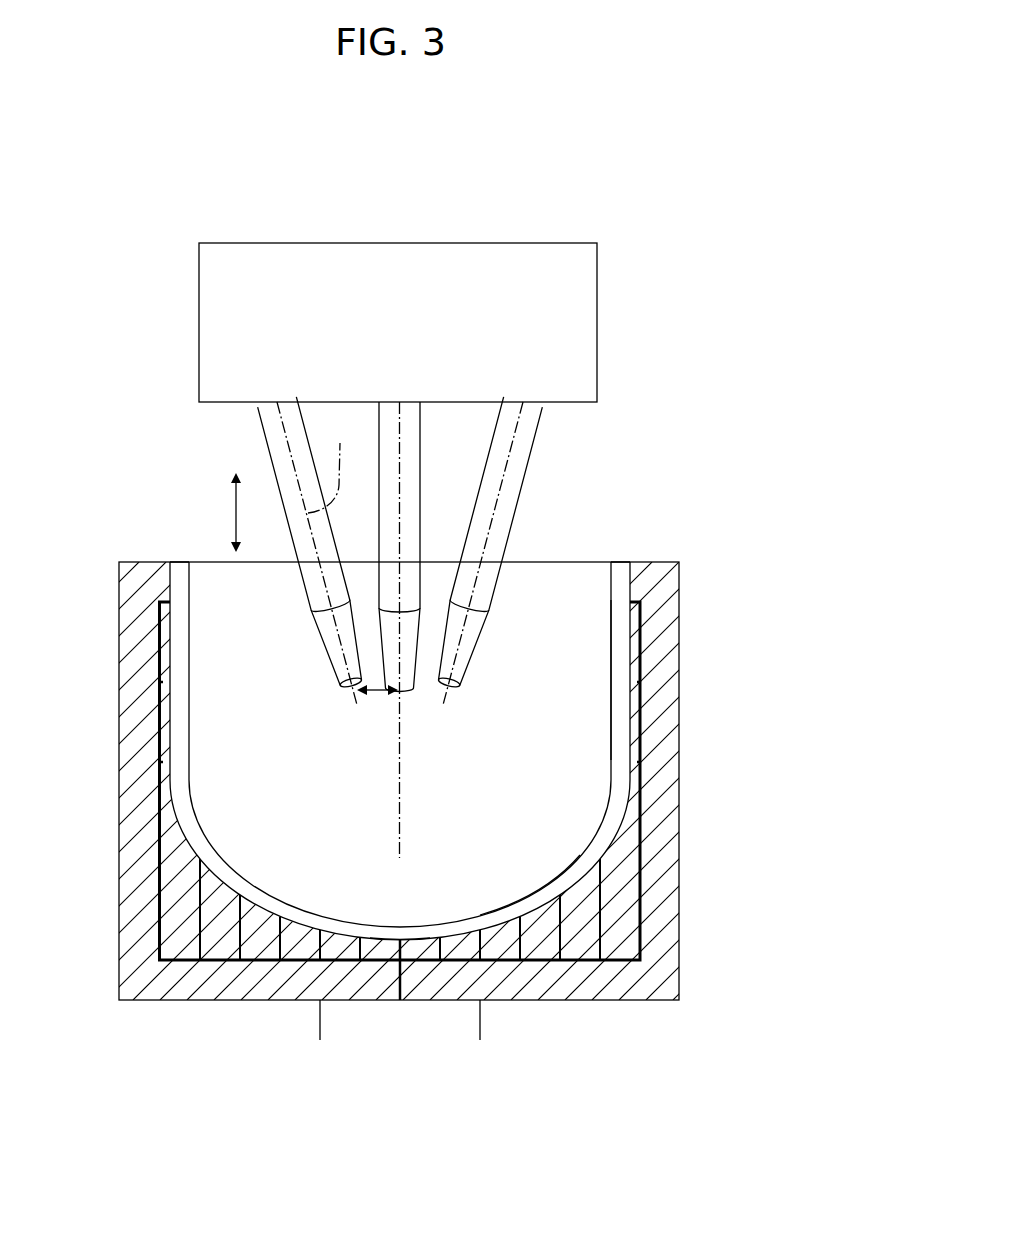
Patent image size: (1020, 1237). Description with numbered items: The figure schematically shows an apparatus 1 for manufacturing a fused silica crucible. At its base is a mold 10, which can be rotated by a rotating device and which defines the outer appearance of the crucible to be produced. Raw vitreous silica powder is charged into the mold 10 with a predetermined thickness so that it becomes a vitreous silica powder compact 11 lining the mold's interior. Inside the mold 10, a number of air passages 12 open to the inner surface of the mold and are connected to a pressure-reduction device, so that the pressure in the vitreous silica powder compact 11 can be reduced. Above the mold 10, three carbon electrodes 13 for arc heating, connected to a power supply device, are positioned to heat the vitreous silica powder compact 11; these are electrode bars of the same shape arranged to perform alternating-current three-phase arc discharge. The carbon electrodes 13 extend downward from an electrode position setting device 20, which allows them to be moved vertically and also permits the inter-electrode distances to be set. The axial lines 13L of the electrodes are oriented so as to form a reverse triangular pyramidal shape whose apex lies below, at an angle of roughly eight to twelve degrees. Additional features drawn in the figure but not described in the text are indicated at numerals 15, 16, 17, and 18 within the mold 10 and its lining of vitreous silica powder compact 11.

The apparatus for manufacturing a fused silica crucible 1 is at (510, 603).
The mold 10 is at (681, 947).
The vitreous silica powder compact 11 is at (458, 743).
The air passages 12 is at (641, 622).
The carbon electrode 13 is at (262, 433).
The axial lines 13L is at (398, 440).
The crucible opening 15 is at (618, 562).
The inner peripheral surface of crucible 16 is at (617, 675).
The bottom surface of crucible 17 is at (558, 876).
The bottom center of crucible 18 is at (388, 930).
The electrode position setting device 20 is at (600, 283).